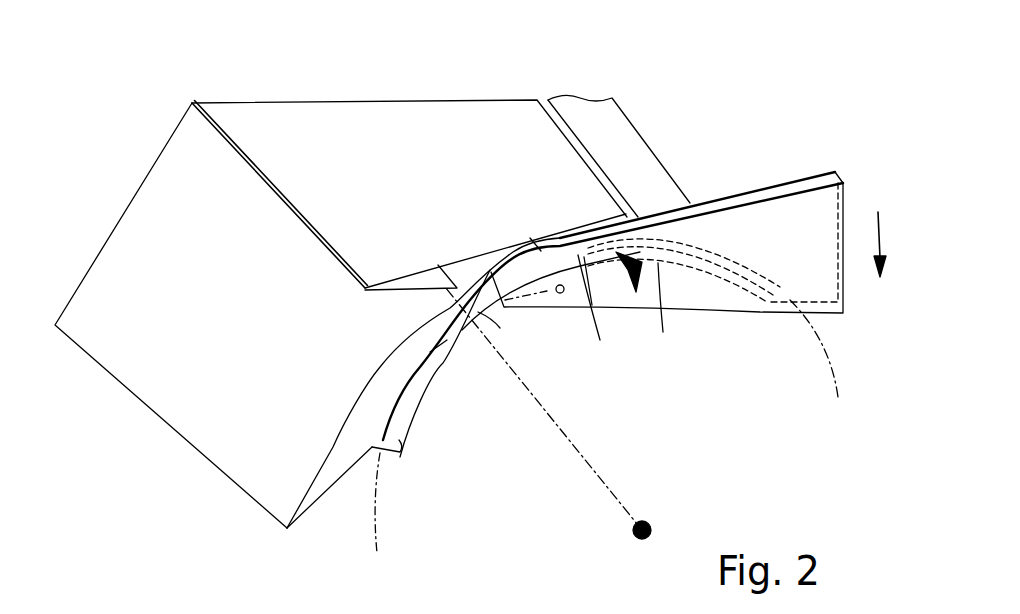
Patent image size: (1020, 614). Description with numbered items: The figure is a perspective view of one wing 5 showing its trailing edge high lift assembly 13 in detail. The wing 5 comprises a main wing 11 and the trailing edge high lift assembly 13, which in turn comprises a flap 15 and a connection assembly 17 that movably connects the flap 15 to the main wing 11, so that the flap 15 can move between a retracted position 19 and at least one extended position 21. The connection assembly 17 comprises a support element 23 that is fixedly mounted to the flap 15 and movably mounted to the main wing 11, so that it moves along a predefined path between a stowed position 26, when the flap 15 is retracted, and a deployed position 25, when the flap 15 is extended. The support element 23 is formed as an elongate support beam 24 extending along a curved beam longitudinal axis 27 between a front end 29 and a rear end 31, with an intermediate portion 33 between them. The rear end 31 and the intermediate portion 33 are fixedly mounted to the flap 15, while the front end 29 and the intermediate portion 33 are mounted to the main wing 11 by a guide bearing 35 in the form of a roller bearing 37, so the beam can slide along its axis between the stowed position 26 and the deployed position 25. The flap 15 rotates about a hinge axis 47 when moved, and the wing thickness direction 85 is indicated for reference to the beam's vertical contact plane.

The wing 5 is at (145, 110).
The extended position 21 is at (122, 178).
The flap 15 is at (202, 427).
The retracted position 19 is at (478, 88).
The main wing 11 is at (735, 155).
The deployed position 25 is at (423, 435).
The rear end 31 is at (397, 453).
The beam longitudinal axis 27 is at (377, 537).
The intermediate portion 33 is at (438, 347).
The support element 23 is at (551, 353).
The support beam 24 is at (482, 313).
The trailing edge high lift assembly 13 is at (522, 450).
The connection assembly 17 is at (558, 340).
The front end 29 is at (592, 305).
The stowed position 26 is at (700, 322).
The guide bearing 35 is at (684, 308).
The roller bearing 37 is at (662, 280).
The wing thickness direction 85 is at (878, 233).
The hinge axis 47 is at (651, 524).